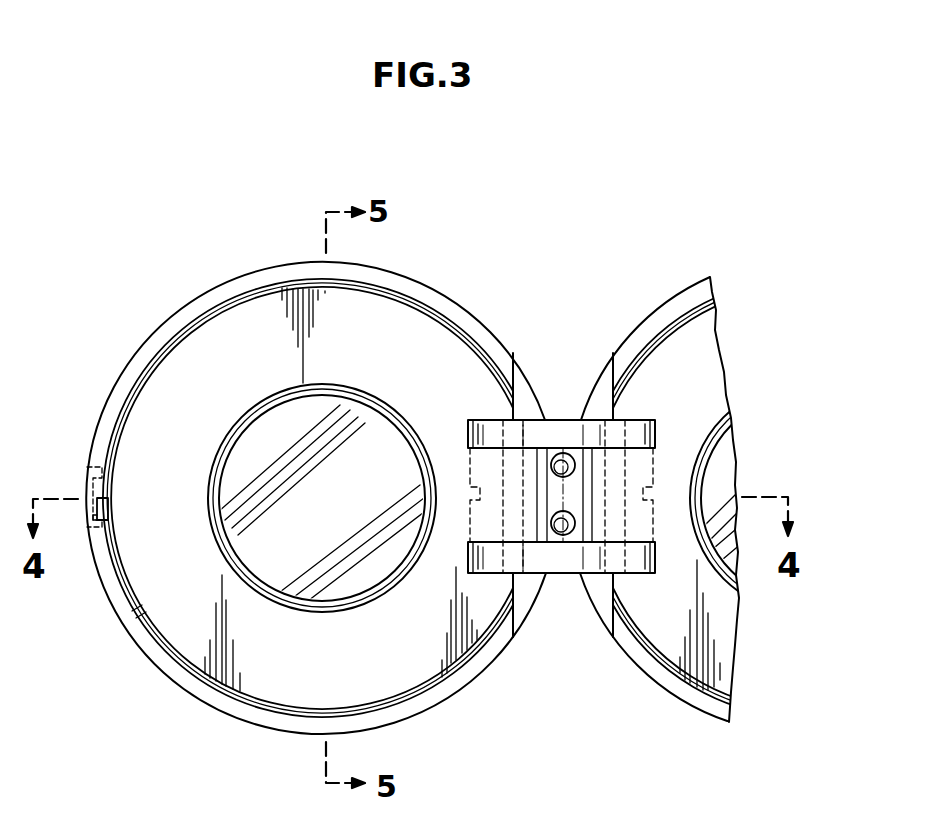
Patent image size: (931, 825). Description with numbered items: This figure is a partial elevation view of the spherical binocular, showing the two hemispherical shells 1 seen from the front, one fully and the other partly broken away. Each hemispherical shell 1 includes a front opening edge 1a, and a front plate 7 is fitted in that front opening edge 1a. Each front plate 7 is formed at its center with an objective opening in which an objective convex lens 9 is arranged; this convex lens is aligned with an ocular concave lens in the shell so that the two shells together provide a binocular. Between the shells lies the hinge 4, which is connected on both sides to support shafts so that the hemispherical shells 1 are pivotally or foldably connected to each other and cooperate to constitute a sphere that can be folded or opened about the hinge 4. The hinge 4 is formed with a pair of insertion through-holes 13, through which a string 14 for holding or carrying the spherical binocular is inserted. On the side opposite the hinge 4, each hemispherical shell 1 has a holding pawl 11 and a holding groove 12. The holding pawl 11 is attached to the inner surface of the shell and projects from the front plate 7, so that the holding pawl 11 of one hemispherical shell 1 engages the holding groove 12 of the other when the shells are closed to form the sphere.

The hemispherical shell 1 is at (255, 275).
The front opening edge 1a is at (212, 320).
The hinge 4 is at (533, 428).
The front plate 7 is at (410, 313).
The objective convex lens 9 is at (377, 573).
The holding pawl 11 is at (97, 503).
The holding groove 12 is at (92, 472).
The insertion through-hole 13 is at (563, 453).
The string 14 is at (575, 505).